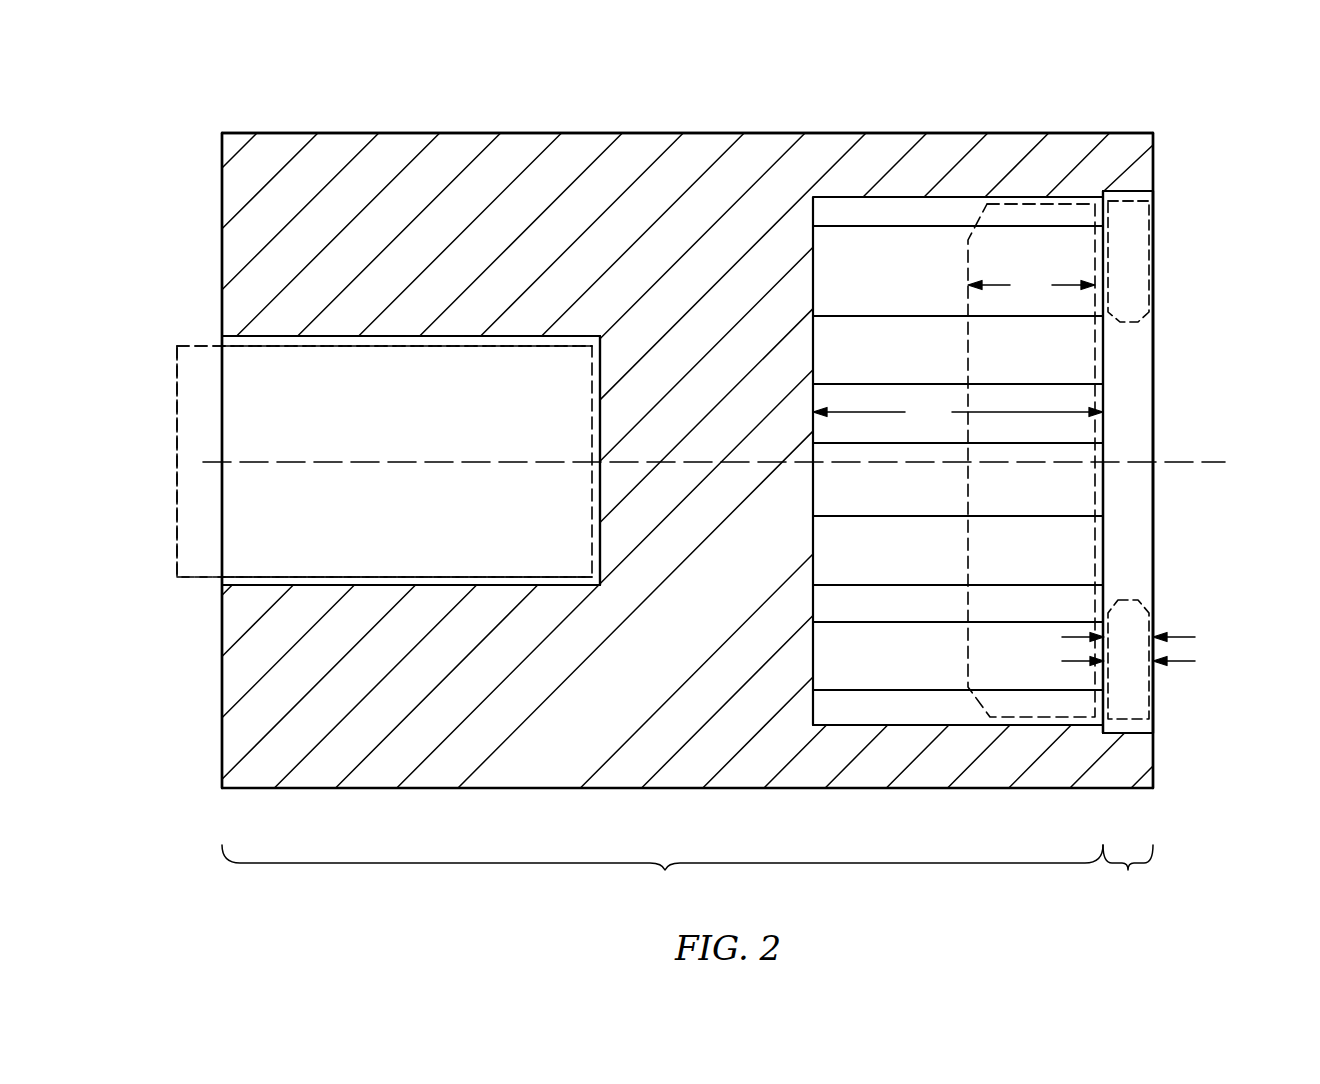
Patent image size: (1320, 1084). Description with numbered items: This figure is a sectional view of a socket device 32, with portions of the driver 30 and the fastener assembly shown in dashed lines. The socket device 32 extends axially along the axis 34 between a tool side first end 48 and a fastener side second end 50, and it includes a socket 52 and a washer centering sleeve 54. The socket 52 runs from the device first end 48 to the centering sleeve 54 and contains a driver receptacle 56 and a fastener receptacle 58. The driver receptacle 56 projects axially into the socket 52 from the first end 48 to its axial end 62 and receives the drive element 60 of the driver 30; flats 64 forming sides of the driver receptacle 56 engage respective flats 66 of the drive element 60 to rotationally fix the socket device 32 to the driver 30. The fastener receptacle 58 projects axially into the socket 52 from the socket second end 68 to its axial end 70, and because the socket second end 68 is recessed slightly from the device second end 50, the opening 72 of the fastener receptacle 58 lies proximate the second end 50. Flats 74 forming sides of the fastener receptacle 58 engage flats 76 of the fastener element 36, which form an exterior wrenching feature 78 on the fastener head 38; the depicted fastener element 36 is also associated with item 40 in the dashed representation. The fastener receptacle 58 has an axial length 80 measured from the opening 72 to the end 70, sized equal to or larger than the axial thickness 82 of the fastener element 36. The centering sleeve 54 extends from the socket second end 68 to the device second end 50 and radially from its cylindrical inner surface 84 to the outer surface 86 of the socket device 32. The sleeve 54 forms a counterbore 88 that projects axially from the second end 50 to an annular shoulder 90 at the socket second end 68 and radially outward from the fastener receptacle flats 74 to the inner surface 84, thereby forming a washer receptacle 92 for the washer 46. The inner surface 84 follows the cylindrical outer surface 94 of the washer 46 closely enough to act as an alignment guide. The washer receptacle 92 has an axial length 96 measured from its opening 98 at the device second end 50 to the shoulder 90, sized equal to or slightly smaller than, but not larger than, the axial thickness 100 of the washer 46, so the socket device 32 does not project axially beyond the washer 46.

The driver 30 is at (192, 318).
The socket device 32 is at (1182, 112).
The axis 34 is at (1214, 460).
The fastener element 36 is at (1032, 143).
The fastener head 38 is at (1032, 143).
The third beam 40 is at (1043, 190).
The washer 46 is at (1170, 262).
The first end 48 is at (222, 170).
The second end 50 is at (1153, 152).
The socket 52 is at (662, 876).
The washer centering sleeve 54 is at (1128, 875).
The driver receptacle 56 is at (337, 600).
The fastener receptacle 58 is at (901, 738).
The drive element 60 is at (310, 345).
The axial end of the driver receptacle 62 is at (600, 512).
The flats 64 is at (253, 337).
The flats 66 is at (395, 345).
The second end 68 is at (1174, 597).
The axial end of the fastener receptacle 70 is at (815, 542).
The opening 72 is at (1120, 349).
The flats 74 is at (817, 325).
The flats 76 is at (1008, 205).
The exterior wrenching feature 78 is at (1000, 738).
The axial length 80 is at (958, 412).
The axial thickness 82 is at (1031, 285).
The inner surface 84 is at (1119, 193).
The outer surface 86 is at (1127, 133).
The counterbore 88 is at (1178, 752).
The shoulder 90 is at (1108, 548).
The washer receptacle 92 is at (1133, 742).
The outer surface 94 is at (1134, 200).
The axial length 96 is at (1180, 661).
The opening 98 is at (1175, 574).
The axial thickness 100 is at (1185, 637).